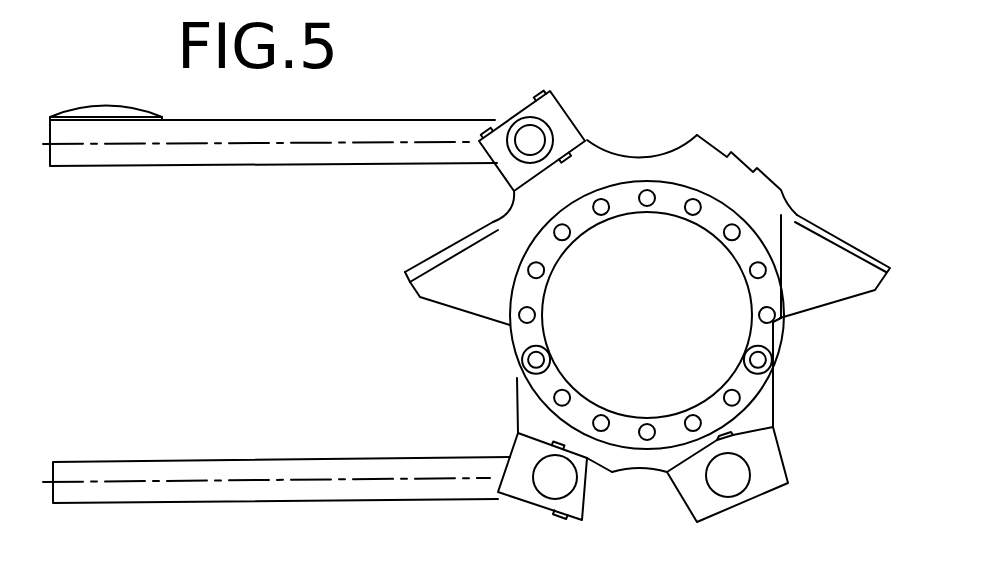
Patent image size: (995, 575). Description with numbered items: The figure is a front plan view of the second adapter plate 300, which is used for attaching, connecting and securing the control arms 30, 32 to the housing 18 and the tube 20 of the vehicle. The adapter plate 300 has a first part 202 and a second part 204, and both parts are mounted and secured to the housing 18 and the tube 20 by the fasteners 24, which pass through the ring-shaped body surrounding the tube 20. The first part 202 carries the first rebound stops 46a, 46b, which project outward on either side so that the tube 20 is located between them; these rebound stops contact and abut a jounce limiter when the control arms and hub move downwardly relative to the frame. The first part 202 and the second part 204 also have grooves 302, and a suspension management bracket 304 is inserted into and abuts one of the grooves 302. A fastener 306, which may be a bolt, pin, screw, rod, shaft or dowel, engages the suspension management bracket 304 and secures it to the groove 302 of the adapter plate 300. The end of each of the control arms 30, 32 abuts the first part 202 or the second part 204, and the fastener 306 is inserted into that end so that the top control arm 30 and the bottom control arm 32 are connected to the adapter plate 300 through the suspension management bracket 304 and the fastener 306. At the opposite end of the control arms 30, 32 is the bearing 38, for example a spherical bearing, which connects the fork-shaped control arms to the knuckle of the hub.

The housing 18 is at (798, 350).
The tube 20 is at (718, 255).
The fasteners 24 is at (691, 199).
The top control arm 30 is at (385, 128).
The bottom control arm 32 is at (122, 468).
The bearing 38 is at (105, 112).
The first rebound stop 46a is at (443, 235).
The first rebound stop 46b is at (843, 224).
The first part 202 is at (592, 160).
The second part 204 is at (615, 462).
The second adapter plate 300 is at (725, 108).
The grooves 302 is at (745, 155).
The suspension management bracket 304 is at (553, 112).
The fastener 306 is at (523, 137).